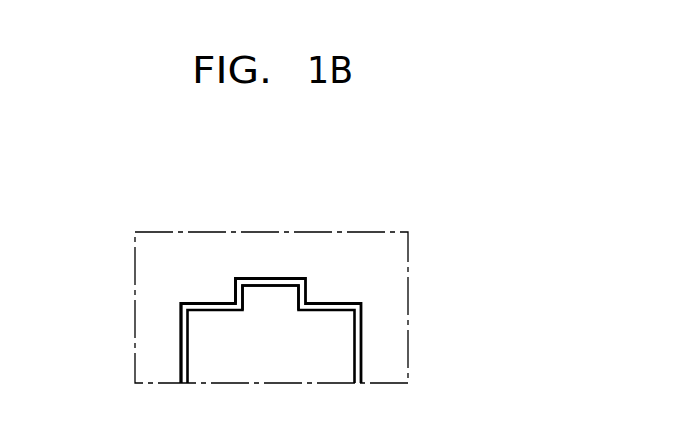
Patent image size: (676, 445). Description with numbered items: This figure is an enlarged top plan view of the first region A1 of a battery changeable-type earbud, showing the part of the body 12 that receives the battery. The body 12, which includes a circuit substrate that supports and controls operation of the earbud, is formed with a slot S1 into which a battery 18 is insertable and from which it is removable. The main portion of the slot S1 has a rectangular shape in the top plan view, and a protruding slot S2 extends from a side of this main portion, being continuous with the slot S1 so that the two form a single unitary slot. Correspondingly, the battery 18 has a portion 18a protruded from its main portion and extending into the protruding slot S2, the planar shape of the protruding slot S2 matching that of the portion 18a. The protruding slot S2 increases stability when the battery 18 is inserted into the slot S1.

The first region A1 is at (362, 231).
The body 12 is at (363, 260).
The battery 18 is at (304, 350).
The portion 18a is at (269, 295).
The protruding slot S2 is at (235, 291).
The slot S1 is at (180, 343).